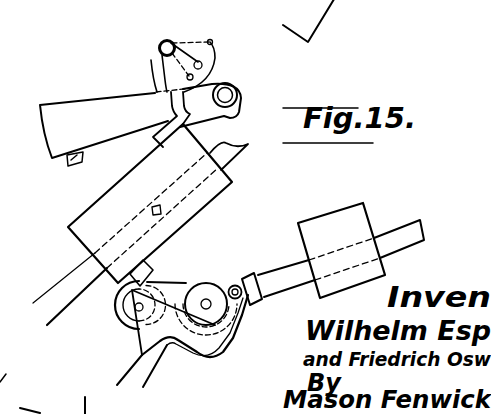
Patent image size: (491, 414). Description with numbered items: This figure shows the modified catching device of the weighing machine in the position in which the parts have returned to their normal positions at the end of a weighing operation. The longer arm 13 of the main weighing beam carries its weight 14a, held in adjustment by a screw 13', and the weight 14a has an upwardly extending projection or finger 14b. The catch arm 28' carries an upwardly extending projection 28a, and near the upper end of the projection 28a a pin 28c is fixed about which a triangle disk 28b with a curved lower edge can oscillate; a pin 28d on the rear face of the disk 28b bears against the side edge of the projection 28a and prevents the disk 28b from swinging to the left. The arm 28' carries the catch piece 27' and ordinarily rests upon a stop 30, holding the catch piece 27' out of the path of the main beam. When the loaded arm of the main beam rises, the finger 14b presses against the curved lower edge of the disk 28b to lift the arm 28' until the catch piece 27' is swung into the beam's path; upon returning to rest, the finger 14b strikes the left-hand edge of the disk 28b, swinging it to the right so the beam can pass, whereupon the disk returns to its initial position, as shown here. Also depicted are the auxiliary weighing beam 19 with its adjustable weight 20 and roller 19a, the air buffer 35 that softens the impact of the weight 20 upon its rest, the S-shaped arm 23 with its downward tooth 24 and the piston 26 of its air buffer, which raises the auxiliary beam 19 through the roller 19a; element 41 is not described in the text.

The longer arm of the main weighing beam 13 is at (113, 239).
The screw 13' is at (139, 200).
The weight of the main weighing beam 14a is at (83, 237).
The projection or finger 14b is at (162, 133).
The auxiliary weighing beam 19 is at (417, 233).
The roller 19a is at (243, 268).
The adjustable weight 20 is at (370, 210).
The S-shaped arm 23 is at (145, 362).
The tooth 24 is at (222, 356).
The piston 26 is at (148, 270).
The catch piece 27' is at (250, 101).
The arm 28' is at (140, 110).
The projection 28a is at (156, 82).
The triangle disk 28b is at (199, 61).
The pin 28c is at (172, 40).
The pin 28d is at (209, 70).
The stop 30 is at (71, 173).
The air buffer 35 is at (327, 21).
The member 41 is at (42, 404).